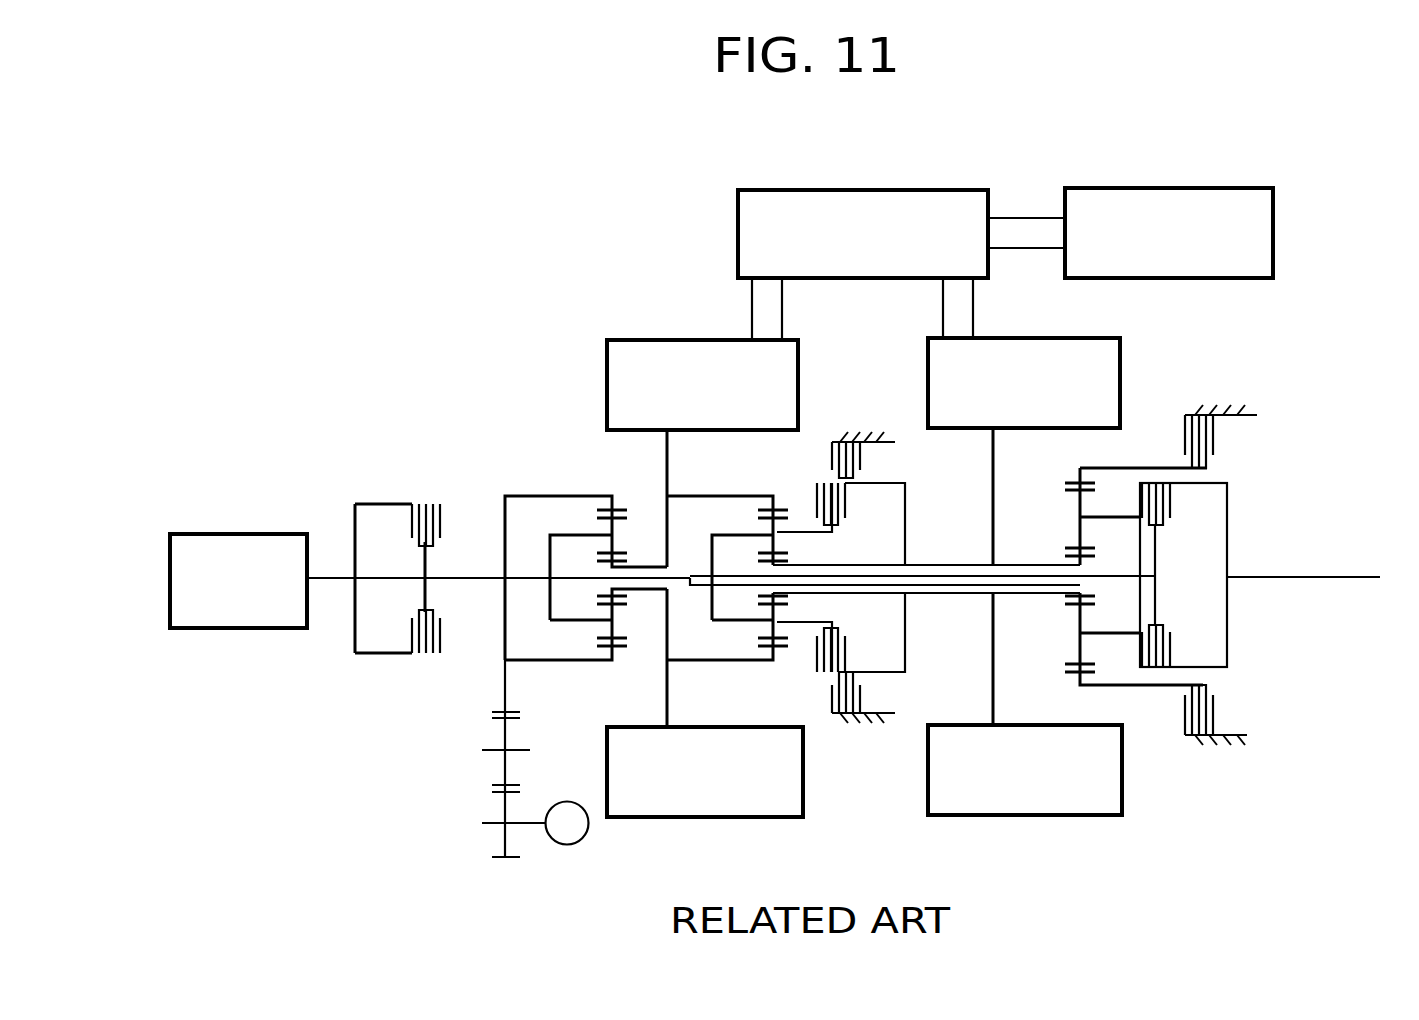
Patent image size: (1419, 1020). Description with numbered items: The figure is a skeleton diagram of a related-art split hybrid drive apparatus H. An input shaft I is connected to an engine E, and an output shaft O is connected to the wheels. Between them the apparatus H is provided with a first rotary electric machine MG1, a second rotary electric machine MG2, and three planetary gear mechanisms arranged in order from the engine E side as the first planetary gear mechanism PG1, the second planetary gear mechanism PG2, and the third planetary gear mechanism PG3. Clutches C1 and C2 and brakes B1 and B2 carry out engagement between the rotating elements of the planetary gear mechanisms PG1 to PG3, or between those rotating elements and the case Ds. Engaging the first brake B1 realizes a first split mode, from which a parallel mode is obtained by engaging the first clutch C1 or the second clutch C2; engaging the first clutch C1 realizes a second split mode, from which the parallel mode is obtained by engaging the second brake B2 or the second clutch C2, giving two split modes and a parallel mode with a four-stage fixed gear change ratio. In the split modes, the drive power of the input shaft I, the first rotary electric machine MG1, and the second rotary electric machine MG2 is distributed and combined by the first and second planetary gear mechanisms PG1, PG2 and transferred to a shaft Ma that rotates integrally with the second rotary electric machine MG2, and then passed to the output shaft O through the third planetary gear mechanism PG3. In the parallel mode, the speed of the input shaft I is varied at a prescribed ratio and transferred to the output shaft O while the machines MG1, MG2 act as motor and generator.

The hybrid drive apparatus H is at (521, 250).
The engine E is at (253, 534).
The input shaft I is at (471, 577).
The output shaft O is at (1336, 575).
The first rotary electric machine MG1 is at (702, 533).
The second rotary electric machine MG2 is at (1024, 531).
The first planetary gear mechanism PG1 is at (603, 488).
The second planetary gear mechanism PG2 is at (764, 672).
The third planetary gear mechanism PG3 is at (1082, 690).
The first brake B1 is at (1217, 441).
The second brake B2 is at (832, 463).
The first clutch C1 is at (1168, 498).
The second clutch C2 is at (845, 498).
The shaft Ma is at (956, 565).
The case Ds is at (862, 434).